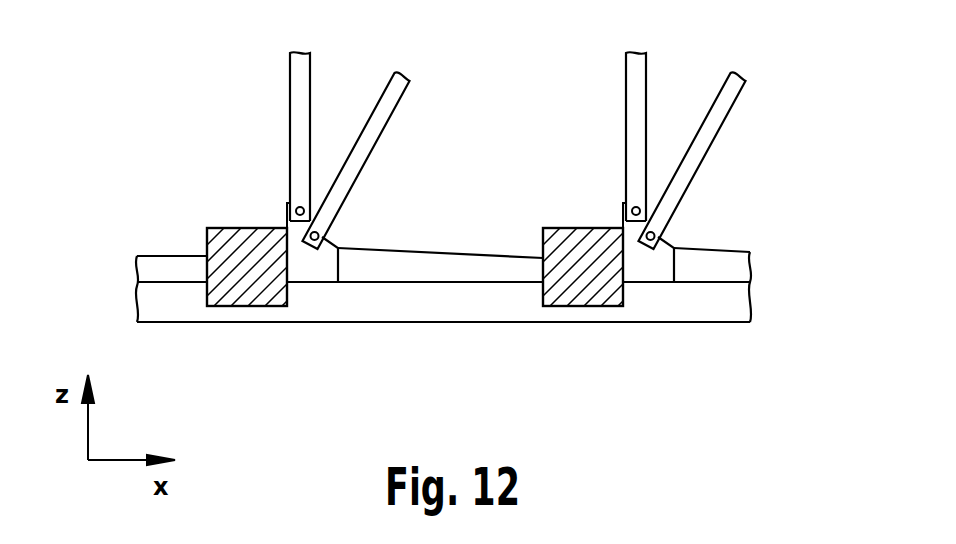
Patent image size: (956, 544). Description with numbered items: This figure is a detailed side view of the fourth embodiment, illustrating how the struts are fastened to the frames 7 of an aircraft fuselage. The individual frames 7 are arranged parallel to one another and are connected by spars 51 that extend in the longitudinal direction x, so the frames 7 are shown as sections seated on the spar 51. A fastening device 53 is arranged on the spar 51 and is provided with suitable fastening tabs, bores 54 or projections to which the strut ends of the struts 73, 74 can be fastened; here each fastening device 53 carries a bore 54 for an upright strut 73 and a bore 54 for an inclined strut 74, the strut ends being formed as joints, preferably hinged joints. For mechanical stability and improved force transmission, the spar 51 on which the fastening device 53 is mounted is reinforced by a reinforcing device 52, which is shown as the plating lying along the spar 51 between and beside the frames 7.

The frame 7 is at (237, 287).
The spar 51 is at (720, 302).
The reinforcing device 52 is at (160, 270).
The fastening device 53 is at (318, 267).
The bore 54 is at (291, 210).
The strut 73 is at (302, 120).
The strut 74 is at (378, 120).